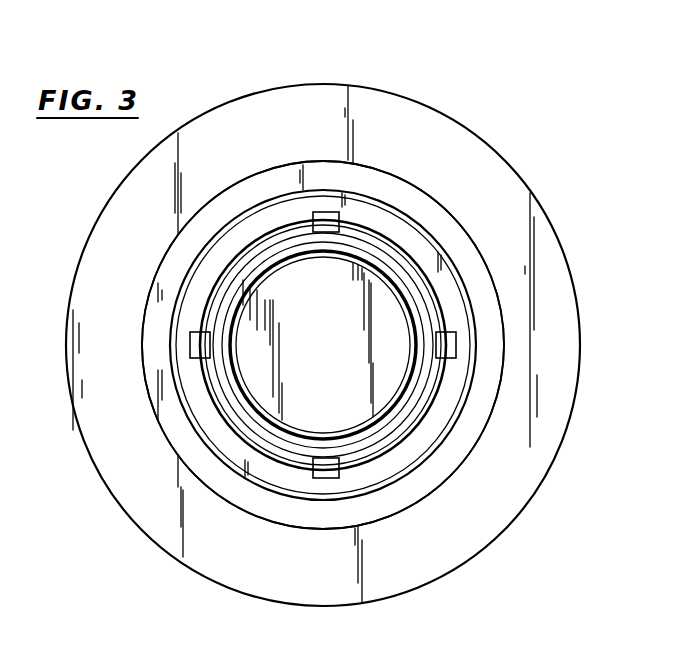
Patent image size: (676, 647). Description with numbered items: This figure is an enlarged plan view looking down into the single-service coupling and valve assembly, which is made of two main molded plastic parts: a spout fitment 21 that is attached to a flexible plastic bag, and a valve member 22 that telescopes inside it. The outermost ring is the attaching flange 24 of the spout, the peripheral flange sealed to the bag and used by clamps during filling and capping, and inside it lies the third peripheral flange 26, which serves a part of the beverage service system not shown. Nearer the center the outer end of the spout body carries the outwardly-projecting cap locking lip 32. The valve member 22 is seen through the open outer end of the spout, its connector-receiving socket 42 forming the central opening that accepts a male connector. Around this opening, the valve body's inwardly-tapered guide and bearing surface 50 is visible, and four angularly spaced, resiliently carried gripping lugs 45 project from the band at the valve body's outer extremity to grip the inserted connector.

The spout fitment 21 is at (223, 305).
The valve member 22 is at (490, 280).
The attaching flange 24 is at (435, 553).
The third peripheral flange 26 is at (487, 427).
The cap locking lip 32 is at (233, 462).
The connector-receiving socket 42 is at (353, 293).
The gripping lugs 45 is at (318, 212).
The guide and bearing surface 50 is at (230, 380).